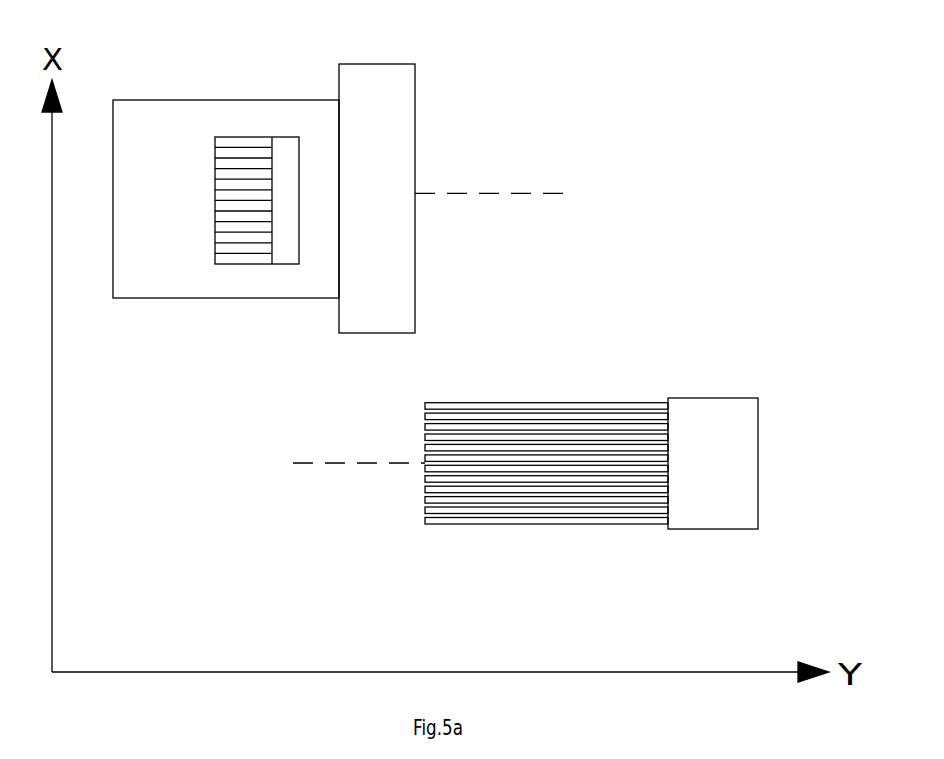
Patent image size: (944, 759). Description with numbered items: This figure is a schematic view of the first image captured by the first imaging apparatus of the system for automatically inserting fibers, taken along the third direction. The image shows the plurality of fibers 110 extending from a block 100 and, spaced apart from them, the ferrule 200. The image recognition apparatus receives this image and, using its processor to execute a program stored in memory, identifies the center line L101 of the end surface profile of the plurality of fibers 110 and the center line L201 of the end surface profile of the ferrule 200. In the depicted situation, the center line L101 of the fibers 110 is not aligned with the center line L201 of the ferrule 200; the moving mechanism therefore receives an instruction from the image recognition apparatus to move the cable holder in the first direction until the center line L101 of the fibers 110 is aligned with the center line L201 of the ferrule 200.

The optical fiber array base / connector 100 is at (713, 522).
The plurality of fibers 110 is at (528, 528).
The ferrule 200 is at (212, 118).
The center line of the plurality of fibers L101 is at (317, 461).
The center line of the ferrule L201 is at (528, 195).